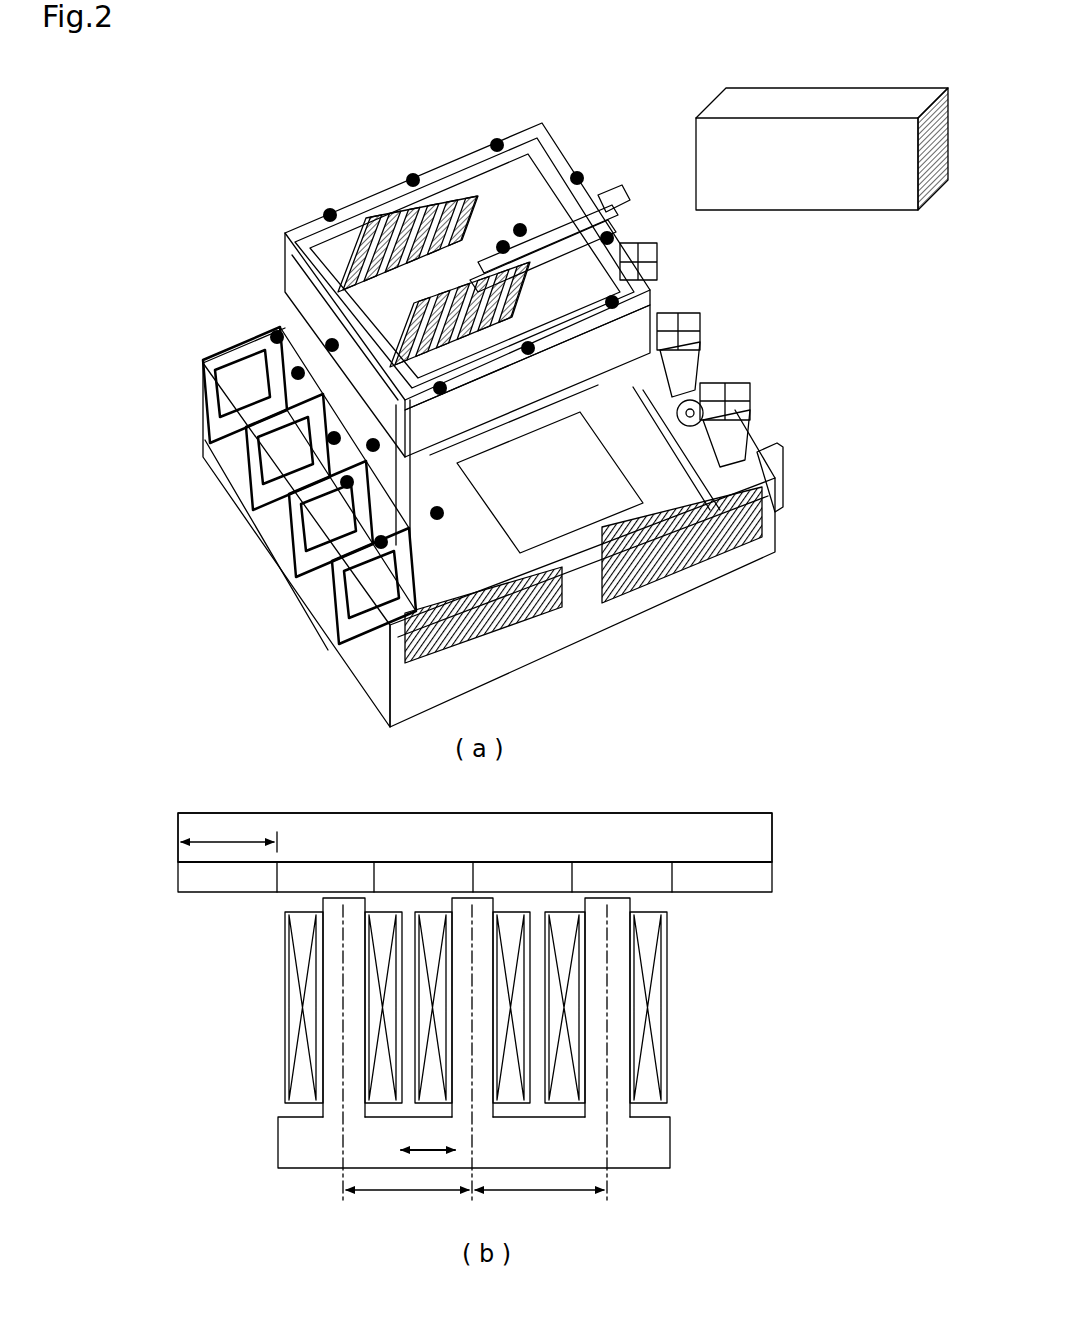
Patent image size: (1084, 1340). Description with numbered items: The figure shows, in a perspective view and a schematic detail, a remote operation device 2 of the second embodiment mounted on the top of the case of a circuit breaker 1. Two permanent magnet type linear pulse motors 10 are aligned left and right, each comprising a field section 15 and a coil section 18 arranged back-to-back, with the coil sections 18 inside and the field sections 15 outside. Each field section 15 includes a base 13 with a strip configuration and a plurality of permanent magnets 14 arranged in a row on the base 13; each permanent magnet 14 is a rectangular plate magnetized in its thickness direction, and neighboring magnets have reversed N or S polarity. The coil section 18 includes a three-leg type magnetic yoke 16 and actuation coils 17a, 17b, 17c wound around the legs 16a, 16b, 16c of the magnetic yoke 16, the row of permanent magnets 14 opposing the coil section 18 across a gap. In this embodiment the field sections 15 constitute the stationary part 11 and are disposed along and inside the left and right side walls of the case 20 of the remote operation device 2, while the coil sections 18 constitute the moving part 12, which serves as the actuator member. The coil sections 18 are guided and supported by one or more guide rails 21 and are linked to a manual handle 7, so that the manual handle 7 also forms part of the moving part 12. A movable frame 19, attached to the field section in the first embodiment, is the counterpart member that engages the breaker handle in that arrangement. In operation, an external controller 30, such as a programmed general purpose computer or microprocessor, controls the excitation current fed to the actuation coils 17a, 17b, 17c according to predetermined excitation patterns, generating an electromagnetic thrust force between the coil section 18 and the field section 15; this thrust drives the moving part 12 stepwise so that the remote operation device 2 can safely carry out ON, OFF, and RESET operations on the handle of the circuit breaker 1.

The circuit breaker 1 is at (566, 655).
The remote operation device 2 is at (300, 222).
The manual handle 7 is at (405, 290).
The linear pulse motor 10 is at (298, 222).
The stationary part 11 is at (404, 854).
The moving part 12 is at (512, 998).
The base 13 is at (187, 825).
The permanent magnets 14 is at (192, 877).
The field section 15 is at (419, 882).
The magnetic yoke 16 is at (652, 1143).
The leg 16a is at (342, 917).
The leg 16b is at (480, 907).
The leg 16c is at (610, 910).
The actuation coil 17a is at (397, 993).
The actuation coil 17b is at (523, 1047).
The actuation coil 17c is at (753, 962).
The coil section 18 is at (393, 313).
The movable frame 19 is at (517, 220).
The case 20 is at (317, 305).
The guide rail 21 is at (695, 192).
The controller 30 is at (822, 149).